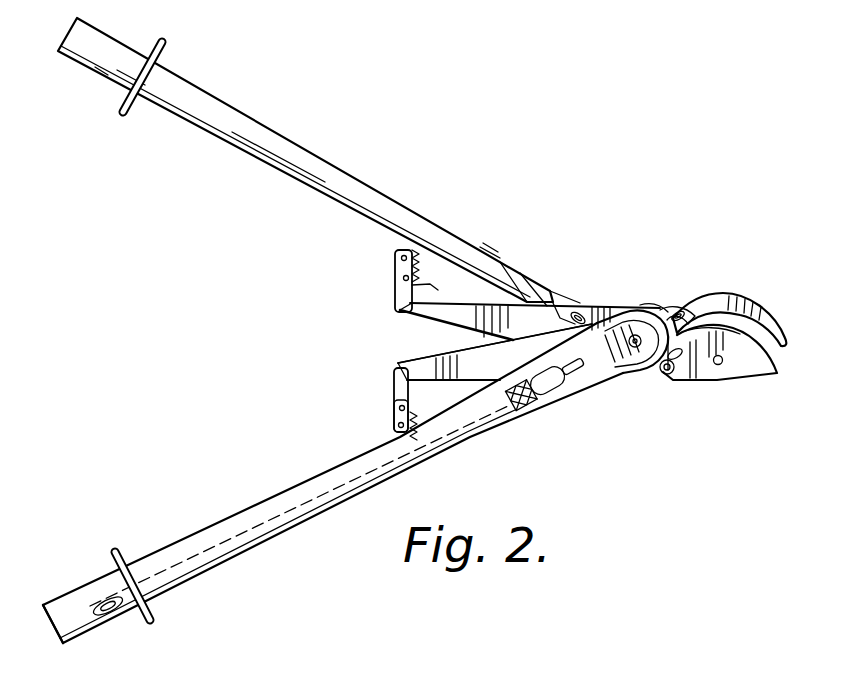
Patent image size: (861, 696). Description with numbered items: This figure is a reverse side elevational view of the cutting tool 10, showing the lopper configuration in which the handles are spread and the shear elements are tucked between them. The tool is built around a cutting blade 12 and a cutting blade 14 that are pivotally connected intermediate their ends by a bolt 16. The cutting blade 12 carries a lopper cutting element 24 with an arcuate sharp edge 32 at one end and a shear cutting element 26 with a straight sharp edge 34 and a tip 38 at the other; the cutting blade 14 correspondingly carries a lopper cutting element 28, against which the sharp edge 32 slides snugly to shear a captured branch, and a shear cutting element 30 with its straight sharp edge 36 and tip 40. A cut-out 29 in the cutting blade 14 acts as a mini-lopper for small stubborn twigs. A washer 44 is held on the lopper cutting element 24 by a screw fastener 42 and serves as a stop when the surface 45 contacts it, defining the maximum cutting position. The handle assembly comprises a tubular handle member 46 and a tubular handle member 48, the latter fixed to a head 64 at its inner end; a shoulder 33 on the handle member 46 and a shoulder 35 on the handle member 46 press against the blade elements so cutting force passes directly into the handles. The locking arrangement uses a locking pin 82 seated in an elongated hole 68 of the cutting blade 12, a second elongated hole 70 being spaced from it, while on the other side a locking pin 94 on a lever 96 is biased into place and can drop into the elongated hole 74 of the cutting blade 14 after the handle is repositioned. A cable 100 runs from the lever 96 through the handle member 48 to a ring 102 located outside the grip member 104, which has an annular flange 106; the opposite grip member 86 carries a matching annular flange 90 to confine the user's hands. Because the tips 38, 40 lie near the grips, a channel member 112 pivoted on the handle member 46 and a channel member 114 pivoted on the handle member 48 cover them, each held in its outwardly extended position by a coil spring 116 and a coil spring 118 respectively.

The cutting tool 10 is at (645, 122).
The cutting blade 12 is at (449, 332).
The cutting blade 14 is at (720, 294).
The bolt 16 is at (642, 308).
The lopper cutting element 24 is at (758, 365).
The shear cutting element 26 is at (545, 296).
The lopper cutting element 28 is at (756, 310).
The cut-out 29 is at (620, 305).
The shear cutting element 30 is at (400, 364).
The sharp edge 32 is at (724, 327).
The shoulder 33 is at (580, 305).
The straight sharp edge 34 is at (405, 318).
The shoulder 35 is at (553, 300).
The straight sharp edge 36 is at (445, 354).
The tip 38 is at (393, 308).
The tip 40 is at (395, 378).
The screw fastener 42 is at (680, 380).
The washer 44 is at (658, 364).
The surface 45 is at (734, 380).
The handle member 46 is at (330, 165).
The handle member 48 is at (240, 555).
The head 64 is at (618, 380).
The elongated hole 68 is at (598, 310).
The elongated hole 70 is at (703, 390).
The elongated hole 74 is at (679, 309).
The locking pin 82 is at (588, 312).
The grip member 86 is at (100, 74).
The annular flange 90 is at (168, 48).
The locking pin 94 is at (590, 380).
The lever 96 is at (548, 412).
The cable 100 is at (272, 494).
The ring 102 is at (118, 614).
The grip member 104 is at (62, 646).
The annular flange 106 is at (114, 550).
The channel member 112 is at (416, 288).
The channel member 114 is at (395, 412).
The coil spring 116 is at (430, 262).
The coil spring 118 is at (420, 442).